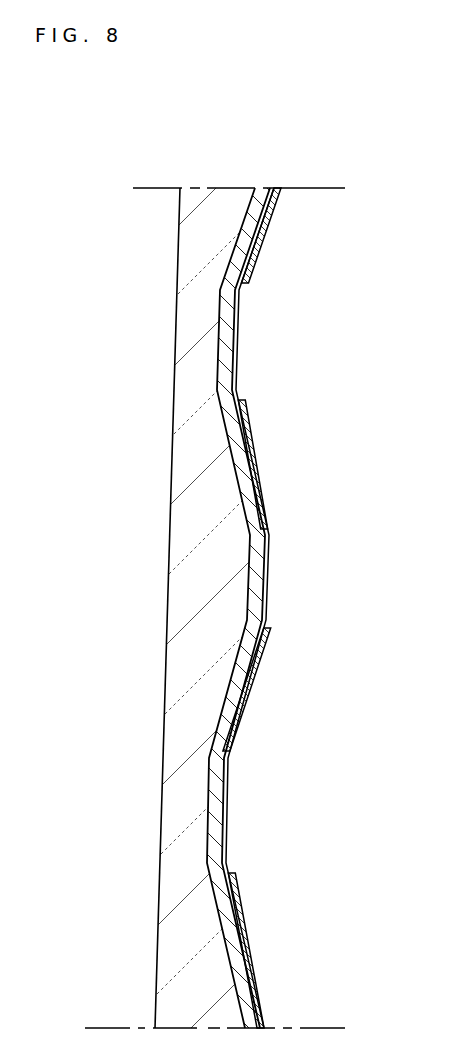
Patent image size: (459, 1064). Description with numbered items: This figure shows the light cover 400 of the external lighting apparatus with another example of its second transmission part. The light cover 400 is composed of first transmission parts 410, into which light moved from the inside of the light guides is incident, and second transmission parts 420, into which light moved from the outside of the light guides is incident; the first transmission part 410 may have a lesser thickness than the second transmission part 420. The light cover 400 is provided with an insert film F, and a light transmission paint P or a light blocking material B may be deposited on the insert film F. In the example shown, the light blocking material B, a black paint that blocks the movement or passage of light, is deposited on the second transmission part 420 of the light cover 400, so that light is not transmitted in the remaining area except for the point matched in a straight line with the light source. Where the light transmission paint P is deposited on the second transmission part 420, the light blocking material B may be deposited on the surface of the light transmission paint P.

The light cover 400 is at (222, 176).
The first transmission part 410 is at (203, 334).
The second transmission part 420 is at (222, 590).
The light transmission paint P is at (271, 585).
The insert film F is at (217, 797).
The light blocking material B is at (257, 452).